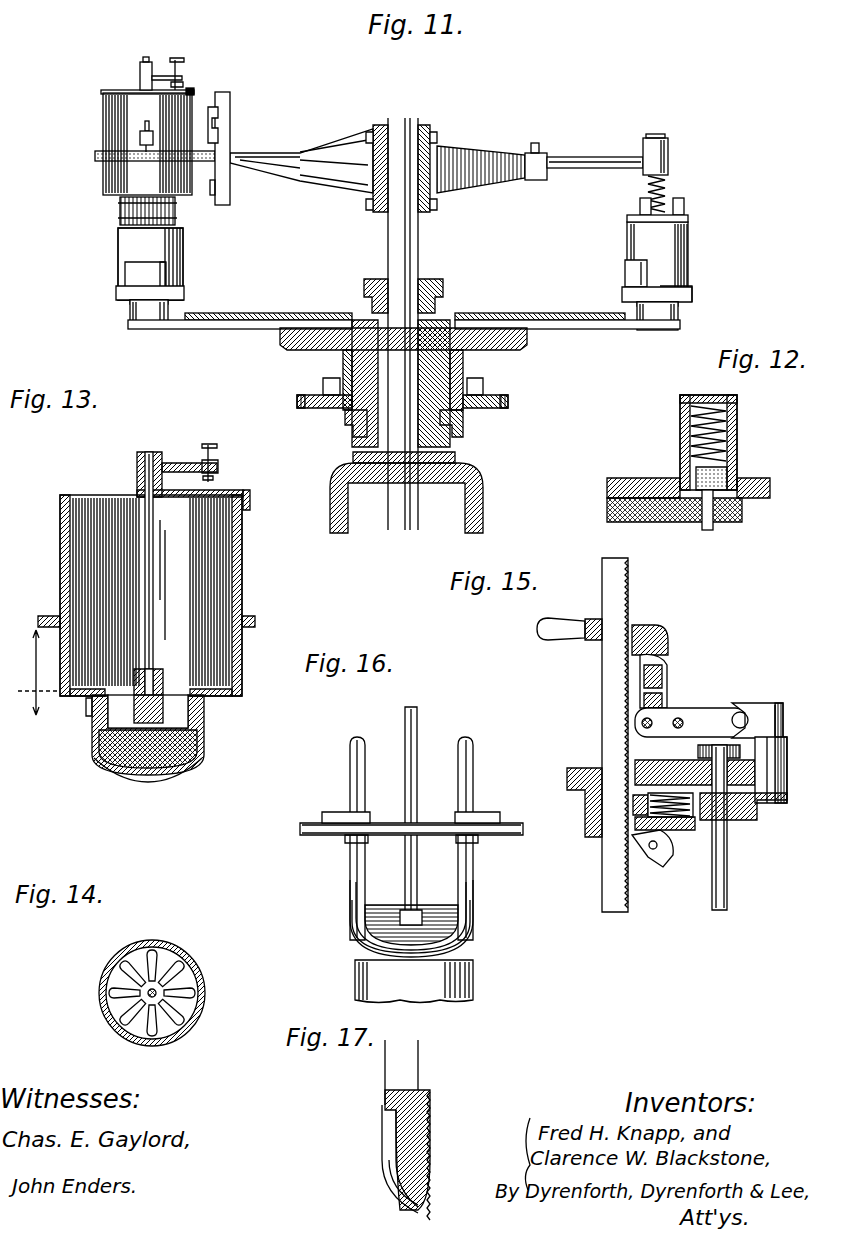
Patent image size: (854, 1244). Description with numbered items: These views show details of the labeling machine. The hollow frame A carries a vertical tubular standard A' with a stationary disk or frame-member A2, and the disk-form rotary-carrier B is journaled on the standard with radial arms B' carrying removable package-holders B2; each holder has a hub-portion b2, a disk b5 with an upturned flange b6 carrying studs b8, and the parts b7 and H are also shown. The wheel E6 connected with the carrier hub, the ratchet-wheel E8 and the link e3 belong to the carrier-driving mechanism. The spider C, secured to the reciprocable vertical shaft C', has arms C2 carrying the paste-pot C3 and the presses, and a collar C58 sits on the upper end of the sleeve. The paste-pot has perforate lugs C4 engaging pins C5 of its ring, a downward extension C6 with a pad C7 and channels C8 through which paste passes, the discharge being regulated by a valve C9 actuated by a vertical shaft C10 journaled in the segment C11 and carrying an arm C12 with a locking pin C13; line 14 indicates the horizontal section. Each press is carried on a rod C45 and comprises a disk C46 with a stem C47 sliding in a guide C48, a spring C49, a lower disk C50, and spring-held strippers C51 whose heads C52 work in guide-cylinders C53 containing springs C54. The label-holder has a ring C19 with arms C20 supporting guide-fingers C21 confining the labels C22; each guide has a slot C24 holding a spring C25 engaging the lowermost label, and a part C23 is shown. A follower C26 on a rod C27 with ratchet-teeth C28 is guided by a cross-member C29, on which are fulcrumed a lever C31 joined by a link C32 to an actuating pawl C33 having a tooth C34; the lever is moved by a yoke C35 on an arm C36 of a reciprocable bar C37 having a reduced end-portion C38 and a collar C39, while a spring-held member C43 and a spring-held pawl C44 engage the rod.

In FIG. 11, the paste-pot C3 is at (105, 93).
In FIG. 13, the paste-pot C3 is at (250, 540).
In FIG. 11, the vertical shaft C10 is at (143, 63).
In FIG. 13, the vertical shaft C10 is at (147, 452).
In FIG. 14, the vertical shaft C10 is at (158, 990).
In FIG. 11, the arm C12 is at (164, 74).
In FIG. 13, the arm C12 is at (183, 463).
In FIG. 11, the locking pin C13 is at (183, 61).
In FIG. 13, the locking pin C13 is at (217, 446).
In FIG. 11, the segment C11 is at (190, 90).
In FIG. 13, the segment C11 is at (223, 490).
In FIG. 11, the pins C5 is at (144, 126).
In FIG. 11, the perforate lugs C4 is at (139, 137).
In FIG. 13, the perforate lugs C4 is at (270, 757).
In FIG. 11, the arms C2 is at (95, 158).
In FIG. 13, the arms C2 is at (255, 620).
In FIG. 11, the downward extension C6 is at (119, 200).
In FIG. 13, the downward extension C6 is at (206, 708).
In FIG. 14, the downward extension C6 is at (188, 958).
In FIG. 11, the pad C7 is at (118, 228).
In FIG. 13, the pad C7 is at (178, 774).
In FIG. 13, the channels C8 is at (100, 716).
In FIG. 14, the channels C8 is at (125, 960).
In FIG. 13, the valve C9 is at (190, 695).
In FIG. 11, the holder cylinder H is at (118, 262).
In FIG. 16, the holder cylinder H is at (358, 965).
In FIG. 11, the upturned flange b6 is at (143, 290).
In FIG. 11, the studs b8 is at (165, 268).
In FIG. 11, the disk b5 is at (116, 296).
In FIG. 11, the hub-portion b2 is at (170, 302).
In FIG. 11, the ring b7 is at (672, 291).
In FIG. 11, the package-holders B2 is at (130, 310).
In FIG. 11, the rotary-carrier B is at (405, 301).
In FIG. 11, the radial arms B' is at (404, 343).
In FIG. 11, the spider C is at (330, 143).
In FIG. 11, the reciprocable vertical shaft C' is at (312, 112).
In FIG. 11, the collar C58 is at (432, 279).
In FIG. 11, the vertical tubular standard A' is at (403, 359).
In FIG. 11, the stationary disk or frame-member A2 is at (463, 425).
In FIG. 11, the hollow frame A is at (419, 498).
In FIG. 11, the ratchet-wheel E8 is at (327, 380).
In FIG. 11, the link e3 is at (297, 400).
In FIG. 11, the wheel E6 is at (492, 395).
In FIG. 11, the rods C45 is at (583, 157).
In FIG. 11, the stem C47 is at (652, 132).
In FIG. 11, the guide C48 is at (668, 145).
In FIG. 11, the spring C49 is at (660, 185).
In FIG. 11, the guide-cylinders C53 is at (640, 205).
In FIG. 12, the guide-cylinders C53 is at (737, 425).
In FIG. 11, the disk C46 is at (688, 222).
In FIG. 12, the disk C46 is at (770, 483).
In FIG. 12, the springs C54 is at (680, 446).
In FIG. 12, the heads C52 is at (727, 478).
In FIG. 12, the lower disk C50 is at (742, 512).
In FIG. 12, the spring-held plungers, or strippers C51 is at (713, 525).
In FIG. 13, the section line 14 is at (32, 672).
In FIG. 15, the rod C27 is at (608, 890).
In FIG. 16, the rod C27 is at (405, 730).
In FIG. 15, the tooth C34 is at (630, 648).
In FIG. 15, the actuating pawl C33 is at (645, 625).
In FIG. 15, the link C32 is at (662, 656).
In FIG. 15, the lever C31 is at (708, 725).
In FIG. 15, the yoke C35 is at (760, 715).
In FIG. 15, the cross-member C29 is at (572, 772).
In FIG. 15, the reduced upper end-portion C38 is at (730, 770).
In FIG. 15, the collar C39 is at (742, 752).
In FIG. 15, the vertically reciprocable bar C37 is at (727, 842).
In FIG. 15, the spring-held member C43 is at (648, 803).
In FIG. 15, the arm C36 is at (750, 808).
In FIG. 15, the spring-held pawl C44 is at (640, 870).
In FIG. 15, the ratchet-teeth C28 is at (630, 908).
In FIG. 16, the vertical guide-fingers C21 is at (460, 780).
In FIG. 17, the vertical guide-fingers C21 is at (408, 1068).
In FIG. 16, the ring C19 is at (310, 837).
In FIG. 16, the arms C20 is at (325, 820).
In FIG. 16, the cup body C23 is at (475, 935).
In FIG. 17, the cup body C23 is at (432, 1126).
In FIG. 16, the labels C22 is at (450, 930).
In FIG. 16, the vertical slot C24 is at (350, 925).
In FIG. 17, the vertical slot C24 is at (390, 1145).
In FIG. 16, the label-follower C26 is at (380, 930).
In FIG. 17, the spring C25 is at (395, 1170).